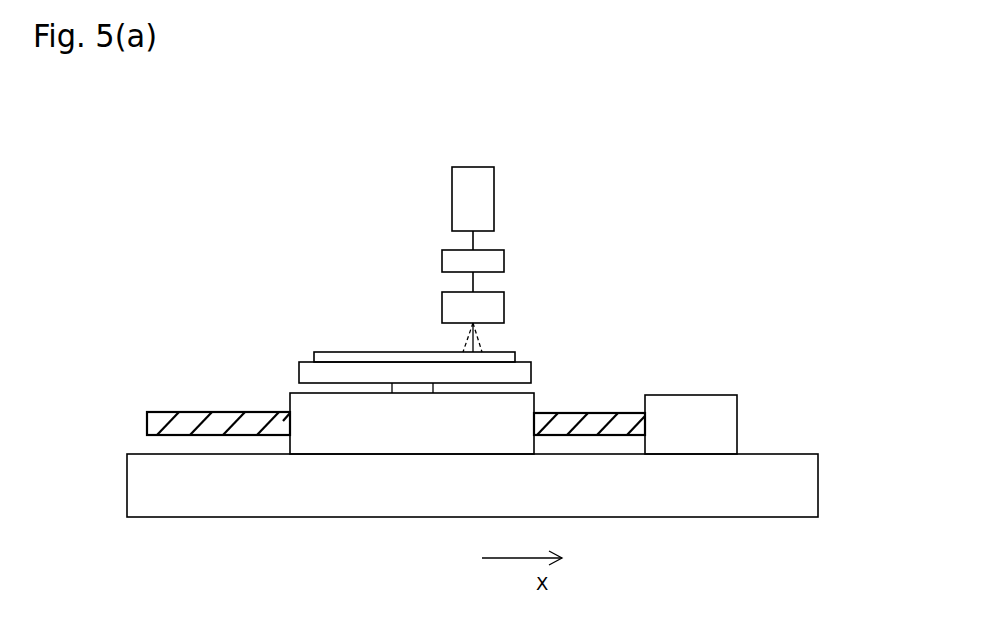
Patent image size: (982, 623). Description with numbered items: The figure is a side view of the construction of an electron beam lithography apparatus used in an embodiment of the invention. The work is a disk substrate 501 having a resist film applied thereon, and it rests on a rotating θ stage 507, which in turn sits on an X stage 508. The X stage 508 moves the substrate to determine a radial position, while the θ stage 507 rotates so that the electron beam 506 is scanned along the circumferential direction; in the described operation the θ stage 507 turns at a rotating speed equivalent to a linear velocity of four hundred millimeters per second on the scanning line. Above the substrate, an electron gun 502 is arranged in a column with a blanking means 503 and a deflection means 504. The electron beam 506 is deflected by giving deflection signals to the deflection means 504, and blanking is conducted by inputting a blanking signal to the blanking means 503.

The disk substrate 501 is at (330, 352).
The electron gun 502 is at (494, 188).
The blanking means 503 is at (504, 260).
The deflection means 504 is at (504, 300).
The electron beam 506 is at (477, 342).
The θ stage 507 is at (300, 363).
The X stage 508 is at (310, 425).